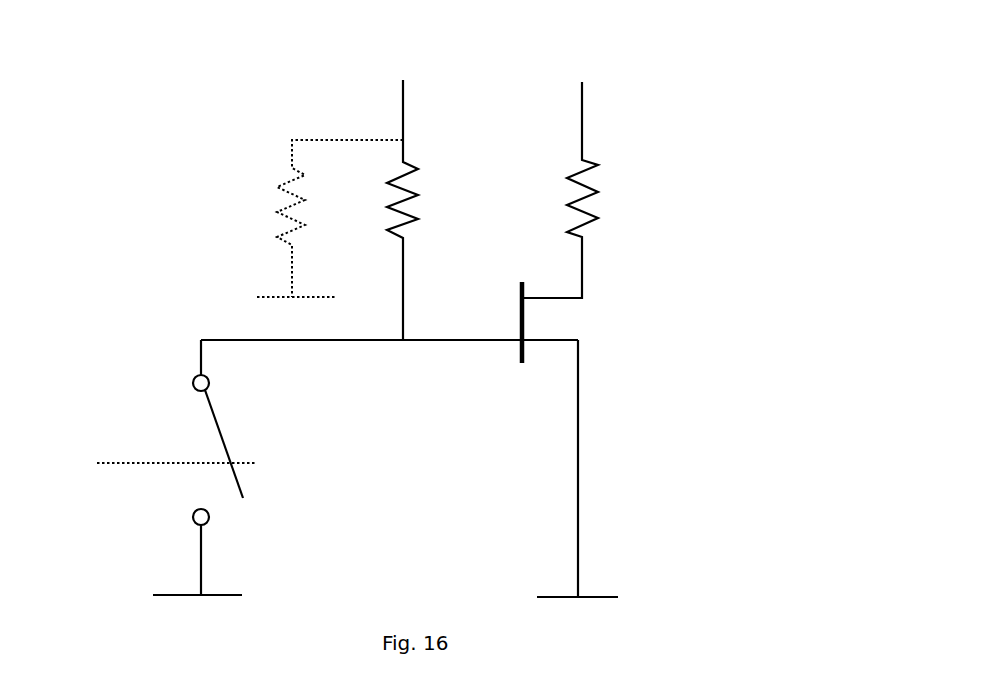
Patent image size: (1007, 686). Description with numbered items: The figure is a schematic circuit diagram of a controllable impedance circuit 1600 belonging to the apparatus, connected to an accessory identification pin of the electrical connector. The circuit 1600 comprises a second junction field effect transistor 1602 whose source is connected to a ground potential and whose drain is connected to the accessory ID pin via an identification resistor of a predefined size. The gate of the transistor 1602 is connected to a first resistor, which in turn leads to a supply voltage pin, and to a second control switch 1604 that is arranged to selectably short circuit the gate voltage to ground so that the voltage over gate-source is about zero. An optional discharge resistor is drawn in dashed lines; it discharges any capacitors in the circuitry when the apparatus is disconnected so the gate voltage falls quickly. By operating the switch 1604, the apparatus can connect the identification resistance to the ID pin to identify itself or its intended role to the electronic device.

The controllable impedance circuit 1600 is at (418, 440).
The second junction field effect transistor 1602 is at (517, 320).
The second control switch 1604 is at (222, 436).